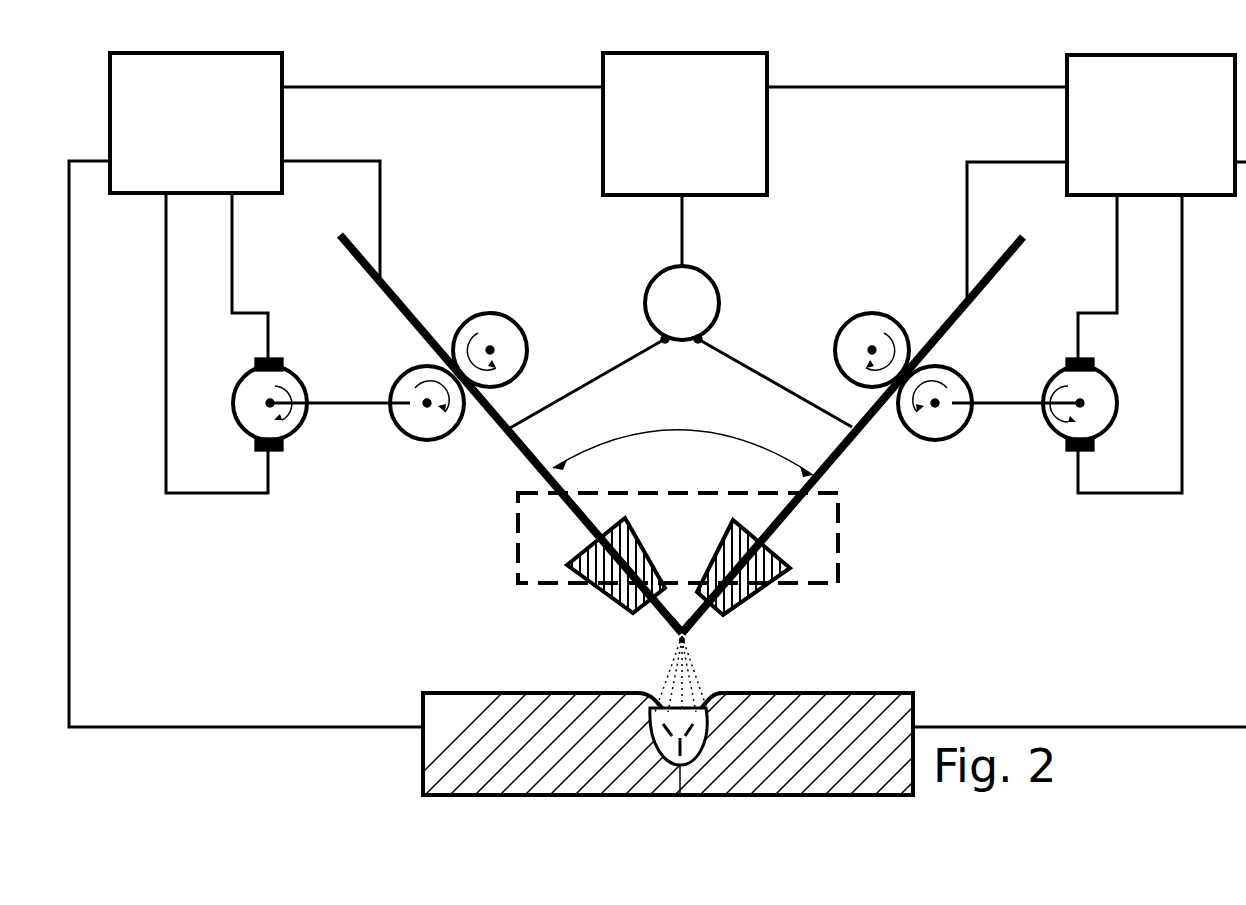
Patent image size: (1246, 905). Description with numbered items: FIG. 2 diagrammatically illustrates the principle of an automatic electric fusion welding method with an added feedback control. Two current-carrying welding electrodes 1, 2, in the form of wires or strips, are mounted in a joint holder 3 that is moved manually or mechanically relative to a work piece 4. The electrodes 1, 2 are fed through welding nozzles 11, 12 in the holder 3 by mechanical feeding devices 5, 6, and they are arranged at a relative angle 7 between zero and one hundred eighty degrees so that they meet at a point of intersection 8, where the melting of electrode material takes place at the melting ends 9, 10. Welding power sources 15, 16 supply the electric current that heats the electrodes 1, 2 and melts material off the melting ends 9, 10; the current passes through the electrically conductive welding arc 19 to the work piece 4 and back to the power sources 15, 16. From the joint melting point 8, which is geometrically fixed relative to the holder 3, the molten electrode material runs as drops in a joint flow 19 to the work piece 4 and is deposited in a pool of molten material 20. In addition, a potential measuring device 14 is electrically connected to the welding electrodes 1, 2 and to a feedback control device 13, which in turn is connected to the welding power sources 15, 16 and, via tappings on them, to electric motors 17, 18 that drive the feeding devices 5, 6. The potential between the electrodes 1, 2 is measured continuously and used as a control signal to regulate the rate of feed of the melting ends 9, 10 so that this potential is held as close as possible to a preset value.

The welding electrode 1 is at (358, 265).
The welding electrode 2 is at (1012, 258).
The joint holder 3 is at (820, 538).
The work piece 4 is at (850, 693).
The mechanical feeding device 5 is at (452, 376).
The mechanical feeding device 6 is at (905, 376).
The relative angle 7 is at (690, 431).
The point of intersection 8 is at (684, 641).
The melting end 9 is at (672, 641).
The melting end 10 is at (711, 638).
The welding nozzle 11 is at (627, 543).
The welding nozzle 12 is at (740, 540).
The feedback control device 13 is at (745, 72).
The potential measuring device 14 is at (705, 283).
The welding power source 15 is at (260, 77).
The welding power source 16 is at (1095, 82).
The electric motor 17 is at (303, 402).
The electric motor 18 is at (1100, 387).
The welding arc 19 is at (677, 682).
The pool of molten material 20 is at (692, 722).